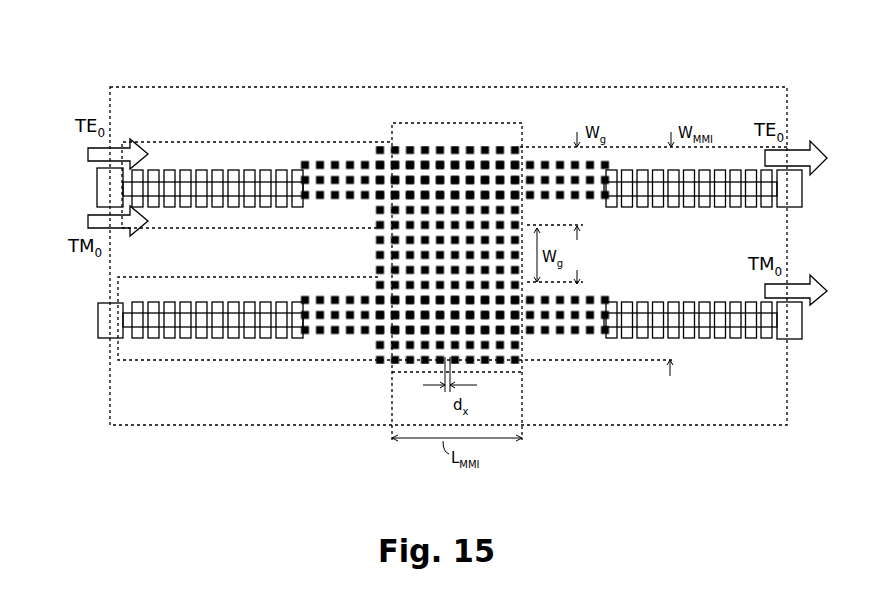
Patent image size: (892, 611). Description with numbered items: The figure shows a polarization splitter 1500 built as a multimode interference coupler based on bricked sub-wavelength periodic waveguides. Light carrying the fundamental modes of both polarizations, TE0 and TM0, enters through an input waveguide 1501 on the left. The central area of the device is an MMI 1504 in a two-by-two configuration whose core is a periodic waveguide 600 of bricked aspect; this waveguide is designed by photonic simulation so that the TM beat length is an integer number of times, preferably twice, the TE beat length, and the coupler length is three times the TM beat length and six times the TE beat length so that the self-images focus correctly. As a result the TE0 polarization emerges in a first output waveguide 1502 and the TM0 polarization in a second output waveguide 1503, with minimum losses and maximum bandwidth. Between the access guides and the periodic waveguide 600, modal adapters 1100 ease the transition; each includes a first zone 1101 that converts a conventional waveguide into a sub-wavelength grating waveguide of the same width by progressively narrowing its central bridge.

The polarization splitter 1500 is at (432, 86).
The input waveguide 1501 is at (100, 181).
The first output waveguide 1502 is at (802, 181).
The second output waveguide 1503 is at (802, 325).
The MMI 1504 is at (467, 145).
The periodic waveguide 600 is at (521, 129).
The first zone 1101 is at (247, 142).
The modal adapter 1100 is at (247, 362).